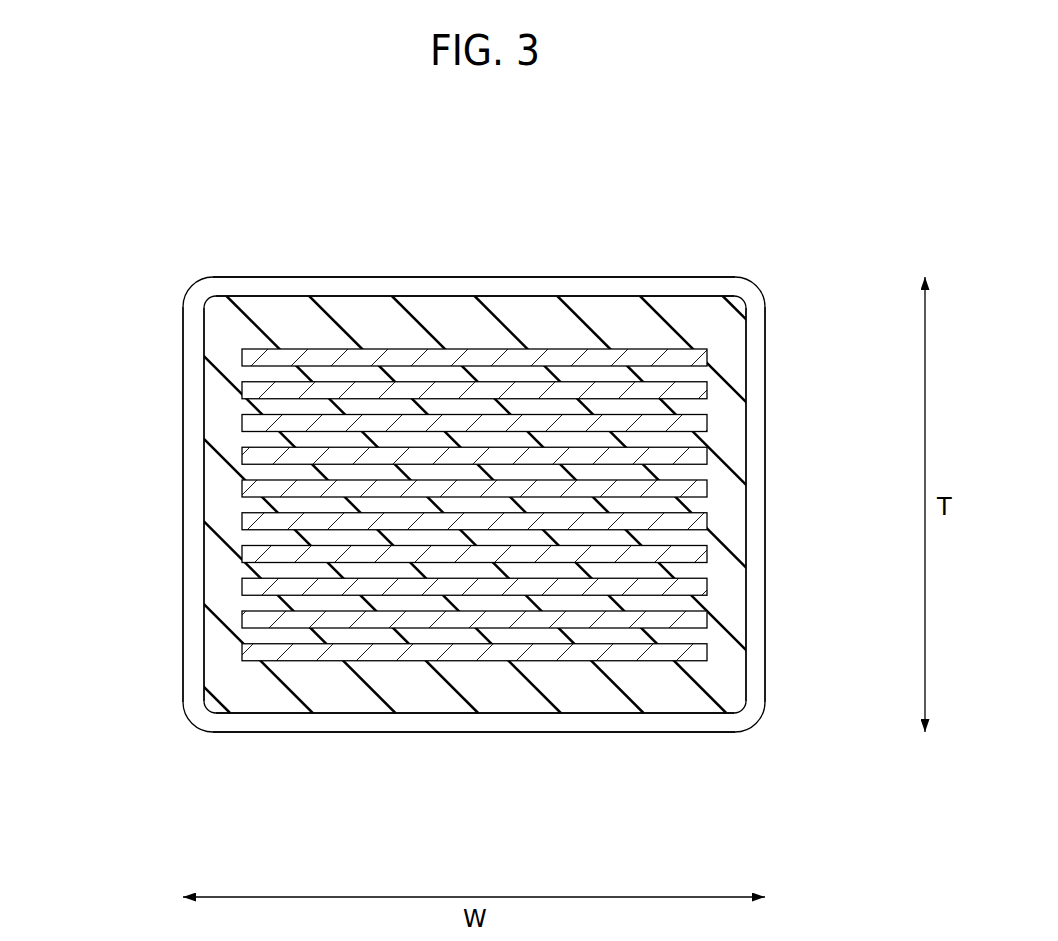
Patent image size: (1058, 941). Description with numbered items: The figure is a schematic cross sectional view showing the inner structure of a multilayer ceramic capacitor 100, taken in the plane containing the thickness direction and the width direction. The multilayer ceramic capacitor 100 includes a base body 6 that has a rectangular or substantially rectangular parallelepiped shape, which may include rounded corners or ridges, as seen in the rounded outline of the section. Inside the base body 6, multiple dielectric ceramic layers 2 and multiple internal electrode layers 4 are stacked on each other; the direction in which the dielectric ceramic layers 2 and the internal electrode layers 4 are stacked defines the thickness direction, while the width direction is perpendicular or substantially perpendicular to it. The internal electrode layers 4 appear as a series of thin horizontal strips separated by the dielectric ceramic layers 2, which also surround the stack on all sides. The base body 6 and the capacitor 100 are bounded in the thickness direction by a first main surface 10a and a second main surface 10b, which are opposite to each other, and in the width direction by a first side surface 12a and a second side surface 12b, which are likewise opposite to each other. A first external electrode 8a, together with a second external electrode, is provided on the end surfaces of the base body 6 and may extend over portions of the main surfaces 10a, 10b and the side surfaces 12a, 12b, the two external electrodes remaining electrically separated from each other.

The multilayer ceramic capacitor 100 is at (744, 236).
The dielectric ceramic layers 2 is at (447, 317).
The internal electrode layers 4 is at (525, 358).
The base body 6 is at (637, 283).
The first external electrode 8a is at (193, 603).
The first main surface 10a is at (282, 255).
The second main surface 10b is at (280, 758).
The first side surface 12a is at (176, 388).
The second side surface 12b is at (776, 390).